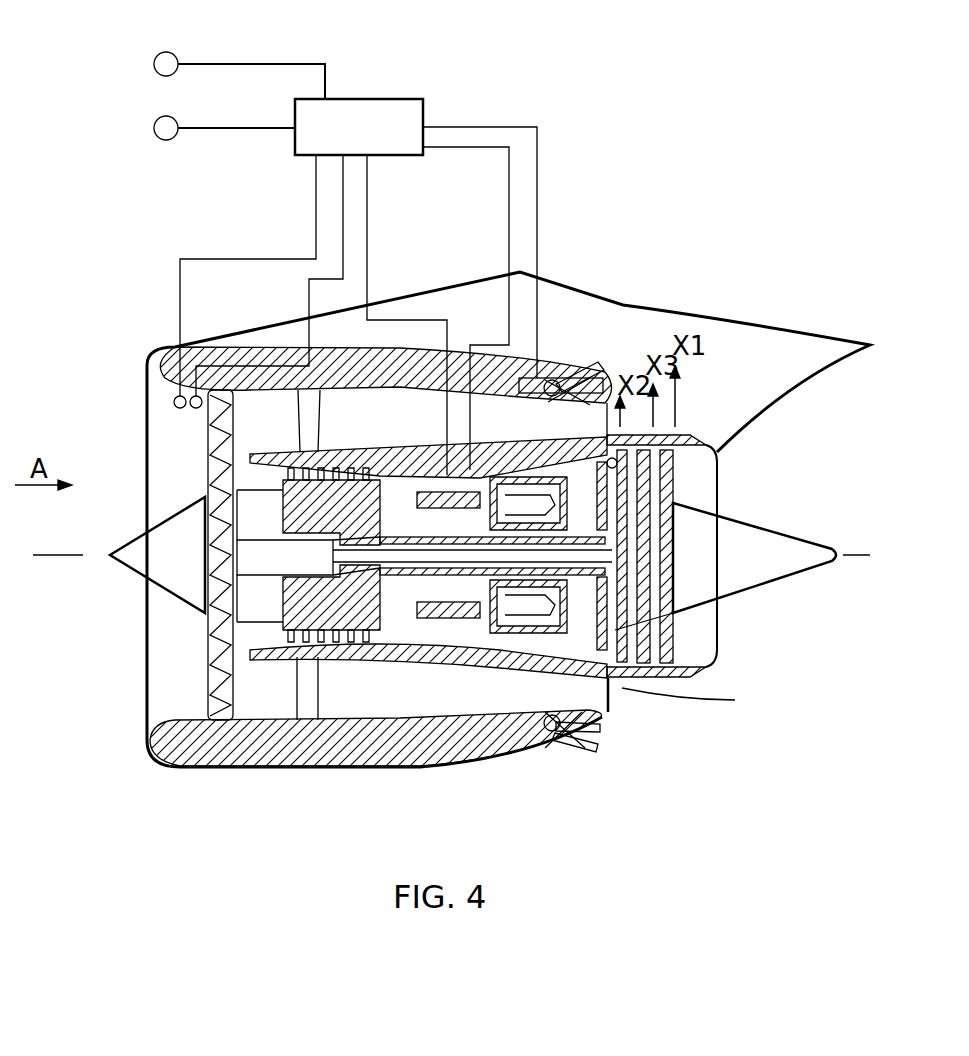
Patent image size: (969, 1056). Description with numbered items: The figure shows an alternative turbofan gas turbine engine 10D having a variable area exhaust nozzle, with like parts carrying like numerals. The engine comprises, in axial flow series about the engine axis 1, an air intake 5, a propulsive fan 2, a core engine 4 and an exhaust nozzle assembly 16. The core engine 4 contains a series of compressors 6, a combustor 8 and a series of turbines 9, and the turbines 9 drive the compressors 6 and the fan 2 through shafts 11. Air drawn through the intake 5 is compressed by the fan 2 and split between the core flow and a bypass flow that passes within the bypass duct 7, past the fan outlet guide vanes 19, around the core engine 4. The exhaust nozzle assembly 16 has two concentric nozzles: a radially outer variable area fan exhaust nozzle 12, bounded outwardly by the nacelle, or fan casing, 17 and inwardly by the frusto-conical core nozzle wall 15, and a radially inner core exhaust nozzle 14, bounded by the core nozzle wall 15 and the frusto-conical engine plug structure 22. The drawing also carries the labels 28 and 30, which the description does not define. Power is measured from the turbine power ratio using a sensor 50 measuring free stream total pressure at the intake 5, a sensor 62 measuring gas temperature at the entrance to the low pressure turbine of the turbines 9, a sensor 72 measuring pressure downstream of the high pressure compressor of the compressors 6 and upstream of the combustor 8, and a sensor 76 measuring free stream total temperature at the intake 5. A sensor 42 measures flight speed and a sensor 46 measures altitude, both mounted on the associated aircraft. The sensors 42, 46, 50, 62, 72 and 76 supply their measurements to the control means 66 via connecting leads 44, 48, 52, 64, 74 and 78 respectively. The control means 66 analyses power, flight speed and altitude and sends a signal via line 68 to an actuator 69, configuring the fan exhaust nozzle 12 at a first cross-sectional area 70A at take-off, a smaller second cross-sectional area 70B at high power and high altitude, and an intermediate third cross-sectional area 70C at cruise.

The engine axis 1 is at (55, 560).
The propulsive fan 2 is at (215, 458).
The core engine 4 is at (352, 652).
The air intake 5 is at (155, 427).
The compressors 6 is at (430, 655).
The bypass duct 7 is at (355, 434).
The combustor 8 is at (535, 640).
The turbines 9 is at (615, 458).
The turbofan gas turbine engine 10D is at (118, 745).
The shafts 11 is at (470, 492).
The variable area fan exhaust nozzle 12 is at (610, 712).
The core exhaust nozzle 14 is at (717, 460).
The core nozzle wall 15 is at (692, 437).
The exhaust nozzle assembly 16 is at (696, 702).
The nacelle 17 is at (538, 373).
The fan outlet guide vanes 19 is at (300, 695).
The engine plug structure 22 is at (800, 532).
The bypass duct casing 28 is at (518, 434).
The turbine 30 is at (710, 504).
The flight speed sensor 42 is at (154, 62).
The connecting lead 44 is at (250, 63).
The altitude sensor 46 is at (154, 127).
The connecting lead 48 is at (222, 130).
The intake pressure sensor 50 is at (174, 399).
The connecting lead 52 is at (180, 278).
The turbine gas temperature sensor 62 is at (560, 600).
The connecting lead 64 is at (509, 185).
The control means 66 is at (388, 108).
The signal line 68 is at (537, 225).
The actuator 69 is at (578, 370).
The first cross-sectional area 70A is at (585, 750).
The second cross-sectional area 70B is at (552, 731).
The third cross-sectional area 70C is at (600, 735).
The core pressure sensor 72 is at (490, 520).
The connecting lead 74 is at (367, 258).
The intake temperature sensor 76 is at (194, 410).
The connecting lead 78 is at (309, 302).